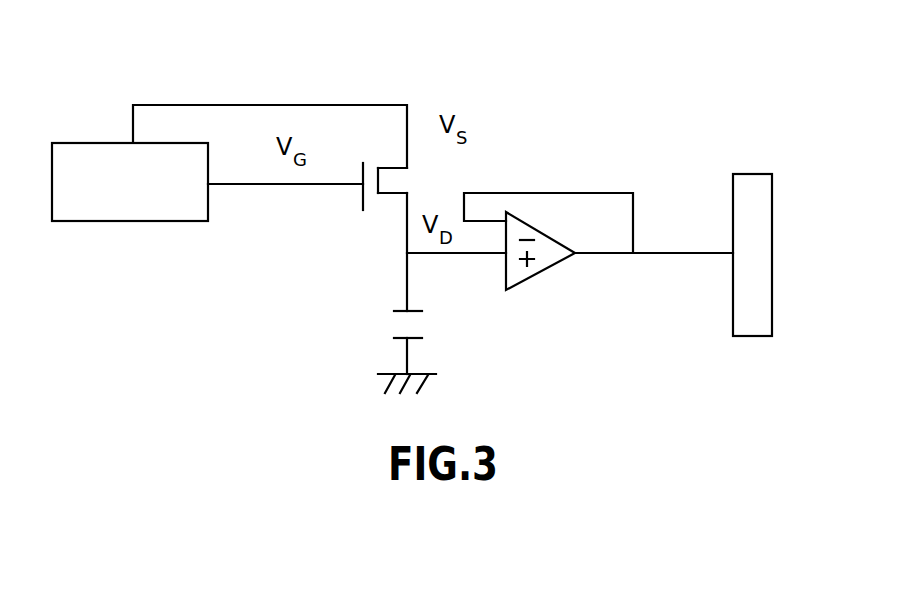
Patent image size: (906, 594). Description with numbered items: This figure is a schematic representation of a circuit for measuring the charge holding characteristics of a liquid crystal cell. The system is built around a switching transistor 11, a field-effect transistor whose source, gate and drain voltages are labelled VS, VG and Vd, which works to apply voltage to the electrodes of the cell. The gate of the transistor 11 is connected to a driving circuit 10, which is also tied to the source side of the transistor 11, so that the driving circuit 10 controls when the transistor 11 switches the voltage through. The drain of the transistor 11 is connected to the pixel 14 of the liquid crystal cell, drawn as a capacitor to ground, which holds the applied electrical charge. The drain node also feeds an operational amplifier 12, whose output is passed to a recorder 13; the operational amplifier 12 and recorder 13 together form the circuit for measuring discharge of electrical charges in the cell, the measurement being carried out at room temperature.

The driving circuit 10 is at (118, 189).
The transistor 11 is at (395, 185).
The operational amplifier 12 is at (540, 270).
The recorder 13 is at (772, 255).
The pixel of the liquid crystal cell 14 is at (405, 327).